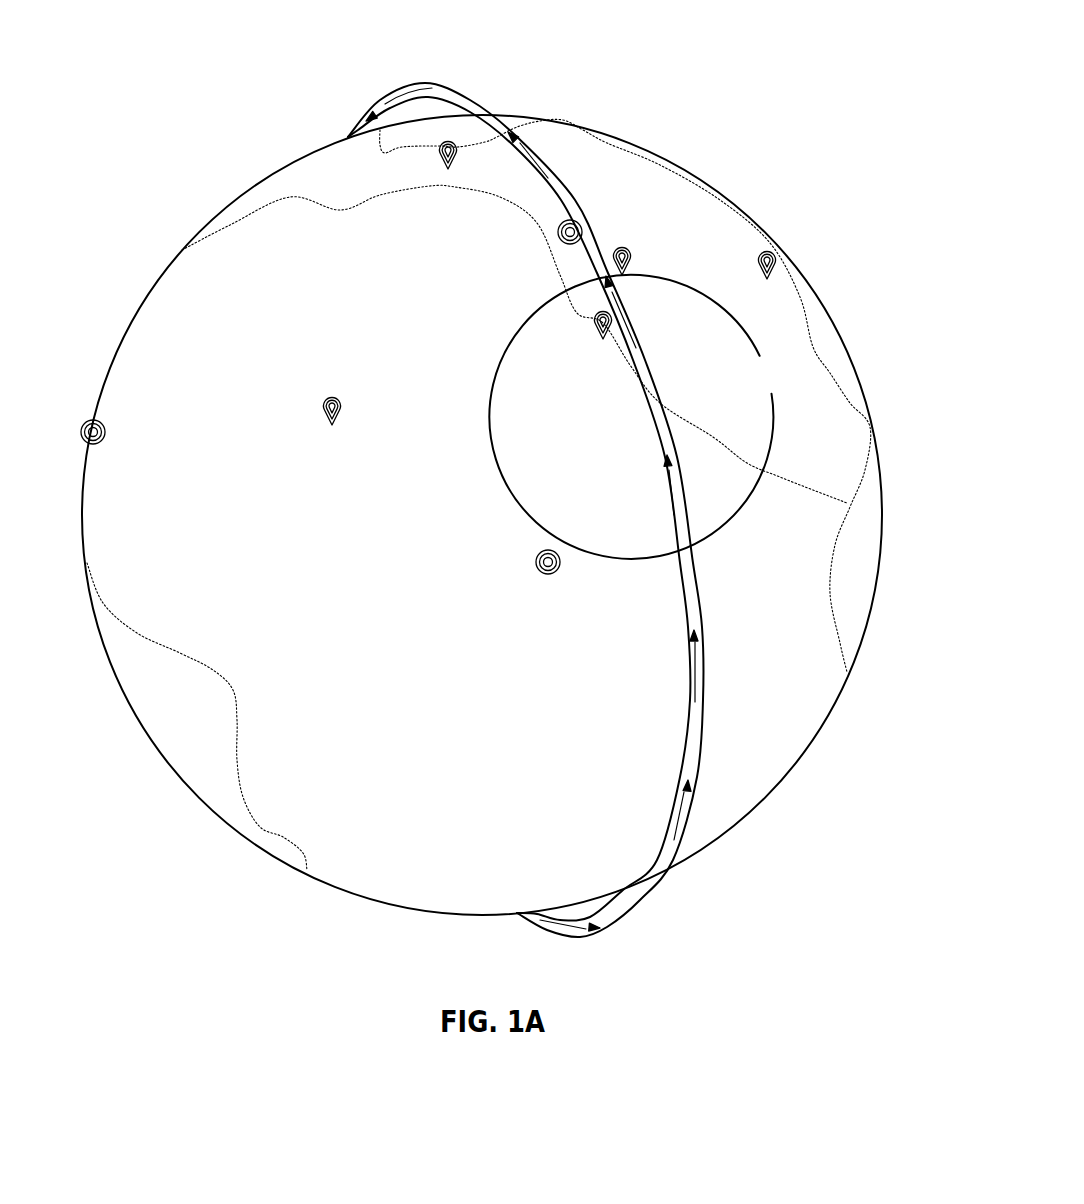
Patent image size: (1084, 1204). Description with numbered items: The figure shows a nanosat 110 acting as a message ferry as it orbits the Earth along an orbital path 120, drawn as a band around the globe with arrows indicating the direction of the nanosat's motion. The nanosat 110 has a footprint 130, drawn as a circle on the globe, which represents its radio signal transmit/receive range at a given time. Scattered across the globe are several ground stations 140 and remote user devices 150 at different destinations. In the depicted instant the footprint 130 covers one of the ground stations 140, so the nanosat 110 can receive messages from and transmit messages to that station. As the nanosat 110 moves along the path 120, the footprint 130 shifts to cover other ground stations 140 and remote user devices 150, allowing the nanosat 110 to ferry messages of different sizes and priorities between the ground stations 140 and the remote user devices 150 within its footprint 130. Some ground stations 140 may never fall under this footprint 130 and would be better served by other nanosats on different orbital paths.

The nanosat 110 is at (705, 400).
The orbital path 120 is at (487, 113).
The footprint 130 is at (752, 345).
The ground stations 140 is at (446, 141).
The remote user devices 150 is at (572, 218).